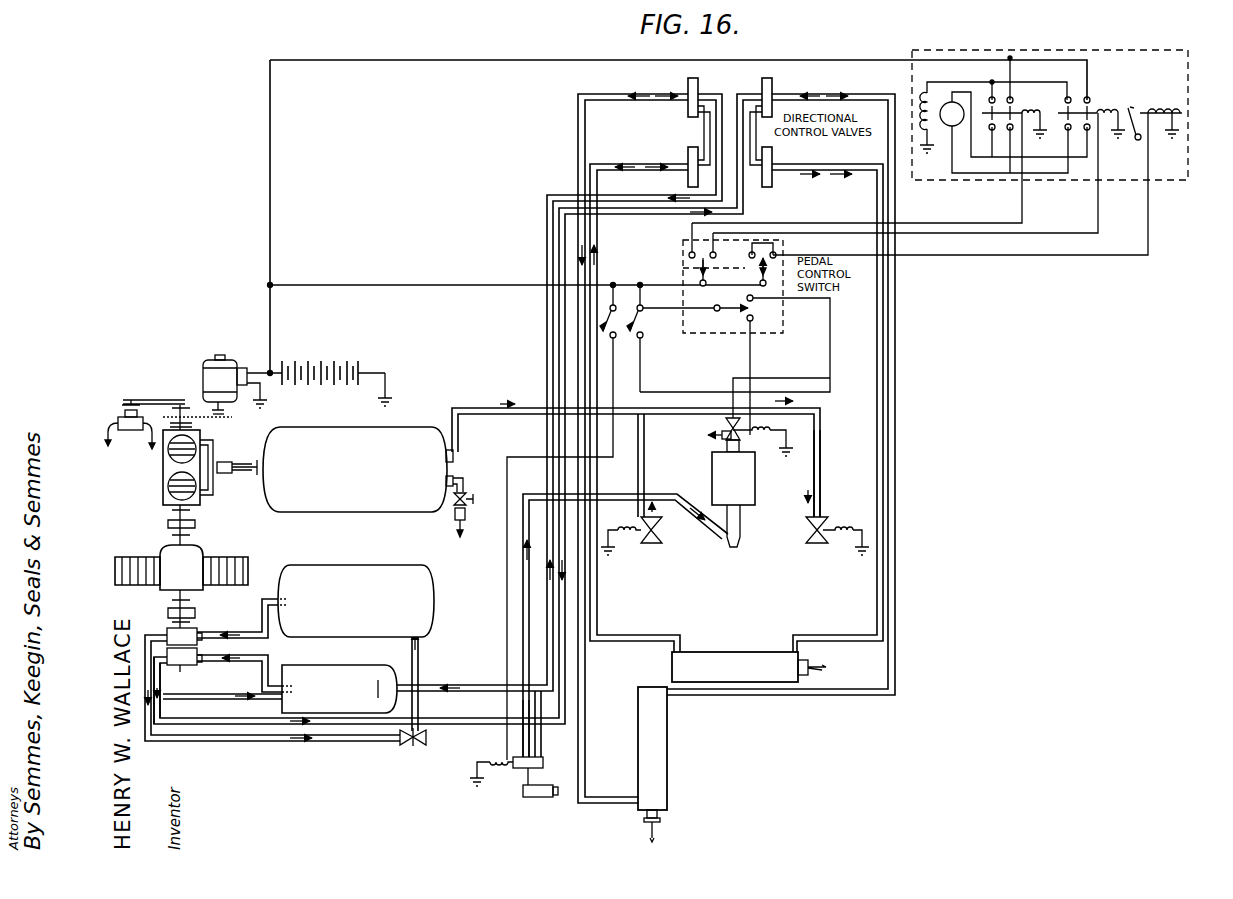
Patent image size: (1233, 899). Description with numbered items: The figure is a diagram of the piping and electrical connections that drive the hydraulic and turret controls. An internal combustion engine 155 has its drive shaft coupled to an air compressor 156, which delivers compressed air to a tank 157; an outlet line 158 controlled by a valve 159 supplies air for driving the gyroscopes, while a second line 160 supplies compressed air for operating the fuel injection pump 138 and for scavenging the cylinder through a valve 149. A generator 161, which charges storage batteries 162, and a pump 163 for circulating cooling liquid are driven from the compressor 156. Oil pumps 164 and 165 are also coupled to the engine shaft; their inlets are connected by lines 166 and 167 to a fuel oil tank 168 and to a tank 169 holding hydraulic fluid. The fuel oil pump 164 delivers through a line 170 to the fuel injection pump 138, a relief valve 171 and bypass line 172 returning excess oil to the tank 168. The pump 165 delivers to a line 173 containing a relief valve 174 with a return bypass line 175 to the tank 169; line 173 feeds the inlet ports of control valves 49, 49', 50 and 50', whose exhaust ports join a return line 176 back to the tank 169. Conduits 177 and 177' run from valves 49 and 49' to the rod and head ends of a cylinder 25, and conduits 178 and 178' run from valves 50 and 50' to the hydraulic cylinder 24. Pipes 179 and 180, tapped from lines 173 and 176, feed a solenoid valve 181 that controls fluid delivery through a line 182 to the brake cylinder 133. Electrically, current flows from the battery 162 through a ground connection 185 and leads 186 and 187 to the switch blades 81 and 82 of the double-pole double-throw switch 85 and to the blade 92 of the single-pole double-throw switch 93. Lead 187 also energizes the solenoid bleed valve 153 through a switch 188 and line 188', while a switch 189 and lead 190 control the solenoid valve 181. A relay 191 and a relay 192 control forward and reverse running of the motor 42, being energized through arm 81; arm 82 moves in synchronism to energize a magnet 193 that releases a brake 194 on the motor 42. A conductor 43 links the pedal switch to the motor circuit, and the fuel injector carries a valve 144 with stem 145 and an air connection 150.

The hydraulic cylinder 24 is at (752, 651).
The cylinder 25 is at (667, 800).
The motor 42 is at (933, 96).
The conductor 43 is at (790, 248).
The control valve 49 is at (675, 90).
The control valve 49' is at (788, 90).
The control valve 50 is at (784, 171).
The control valve 50' is at (679, 162).
The switch blade 81 is at (686, 270).
The switch blade 82 is at (752, 292).
The double-pole double-throw switch 85 is at (738, 264).
The switch blade 92 is at (724, 312).
The single-pole double-throw switch 93 is at (768, 318).
The brake cylinder 133 is at (522, 795).
The fuel injection pump 138 is at (712, 475).
The fuel injector valve 144 is at (725, 424).
The fuel injector valve stem 145 is at (726, 446).
The valve 149 is at (806, 530).
The air pipe 150 is at (812, 477).
The solenoid bleed valve 153 is at (663, 530).
The internal combustion engine 155 is at (170, 550).
The air compressor 156 is at (160, 481).
The tank 157 is at (312, 513).
The outlet line 158 is at (457, 476).
The valve 159 is at (455, 507).
The second line 160 is at (480, 405).
The generator 161 is at (220, 358).
The storage batteries 162 is at (321, 387).
The pump 163 is at (110, 428).
The fuel oil pump 164 is at (170, 628).
The oil pump 165 is at (165, 675).
The line 166 is at (250, 630).
The line 167 is at (239, 673).
The fuel oil tank 168 is at (360, 564).
The tank 169 is at (350, 664).
The line 170 is at (200, 738).
The relief valve 171 is at (400, 740).
The bypass line 172 is at (419, 678).
The line 173 is at (630, 214).
The relief valve 174 is at (250, 693).
The return bypass line 175 is at (279, 740).
The return line 176 is at (656, 198).
The conduit 177 is at (620, 458).
The conduit 177' is at (782, 391).
The conduit 178 is at (827, 398).
The conduit 178' is at (639, 395).
The pipe 179 is at (530, 747).
The pipe 180 is at (542, 757).
The solenoid valve 181 is at (514, 769).
The line 182 is at (531, 777).
The ground connection 185 is at (388, 392).
The lead 186 is at (268, 280).
The lead 187 is at (445, 286).
The switch 188 is at (654, 321).
The line 188' is at (643, 336).
The switch 189 is at (628, 297).
The lead 190 is at (606, 284).
The relay 191 is at (1012, 104).
The relay 192 is at (1088, 104).
The magnet 193 is at (1135, 97).
The brake 194 is at (1133, 150).